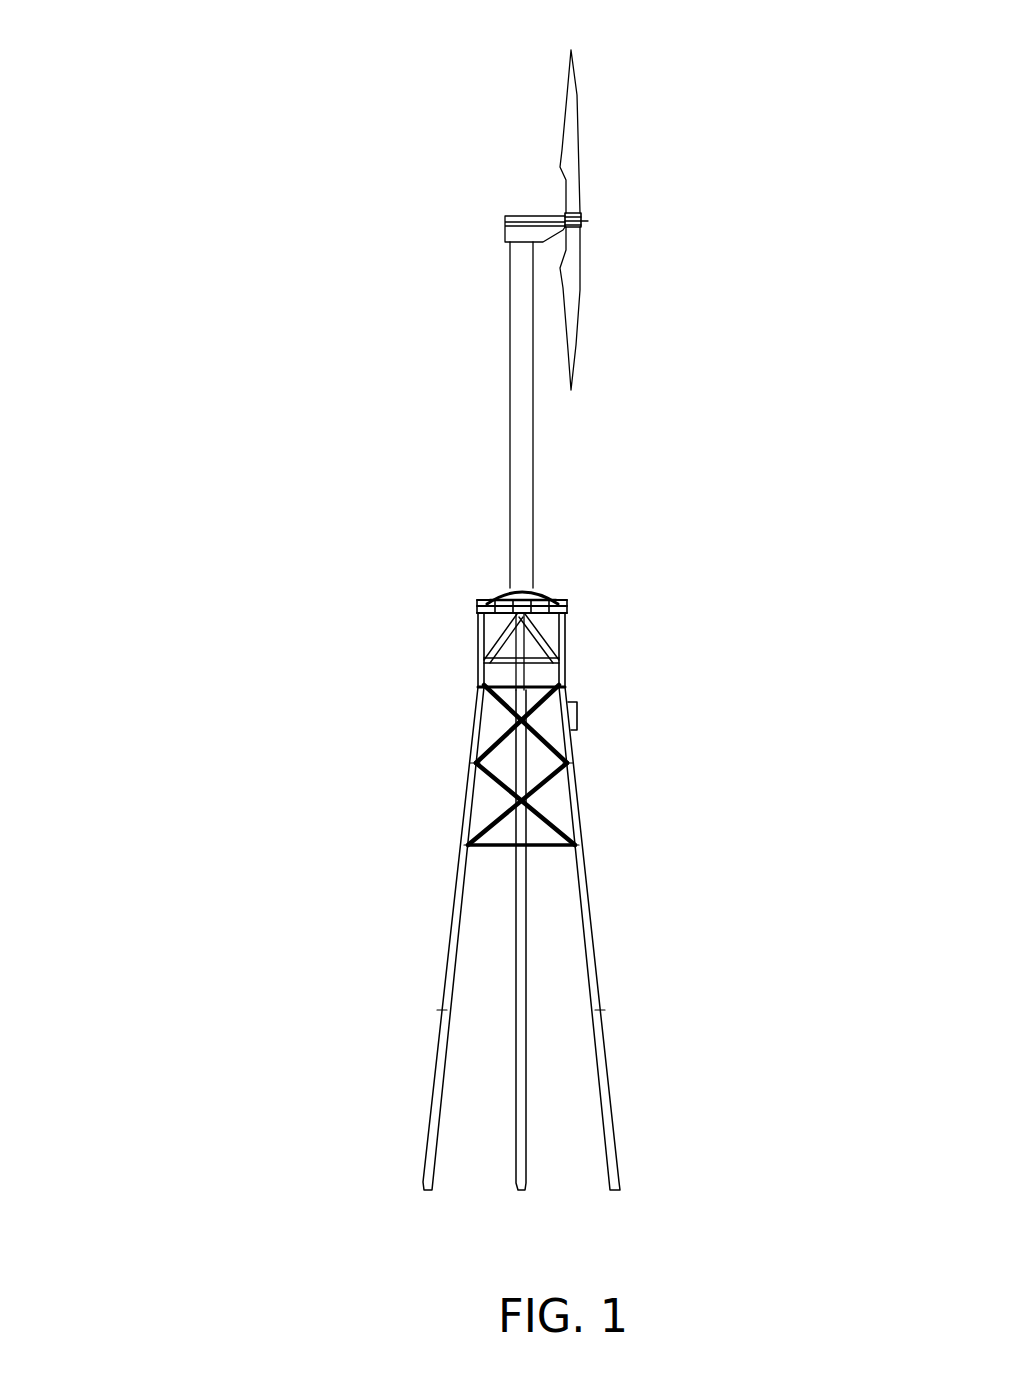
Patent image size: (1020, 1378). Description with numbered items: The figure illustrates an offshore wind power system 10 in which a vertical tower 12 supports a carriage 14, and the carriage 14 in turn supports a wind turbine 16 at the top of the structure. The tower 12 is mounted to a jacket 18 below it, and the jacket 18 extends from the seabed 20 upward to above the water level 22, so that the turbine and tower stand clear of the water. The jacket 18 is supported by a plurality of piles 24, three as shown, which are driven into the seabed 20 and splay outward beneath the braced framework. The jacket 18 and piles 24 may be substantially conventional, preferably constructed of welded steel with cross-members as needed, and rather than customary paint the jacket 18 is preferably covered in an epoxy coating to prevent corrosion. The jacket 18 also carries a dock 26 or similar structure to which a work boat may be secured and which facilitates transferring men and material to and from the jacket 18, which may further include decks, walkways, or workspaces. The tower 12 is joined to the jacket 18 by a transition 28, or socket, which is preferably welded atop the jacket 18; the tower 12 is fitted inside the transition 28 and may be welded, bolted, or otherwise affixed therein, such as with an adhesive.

The wind power system 10 is at (238, 127).
The vertical tower 12 is at (533, 477).
The carriage 14 is at (505, 215).
The wind turbine 16 is at (582, 213).
The jacket 18 is at (565, 637).
The seabed 20 is at (460, 847).
The water level 22 is at (475, 713).
The piles 24 is at (592, 917).
The dock 26 is at (578, 708).
The transition 28 is at (545, 590).